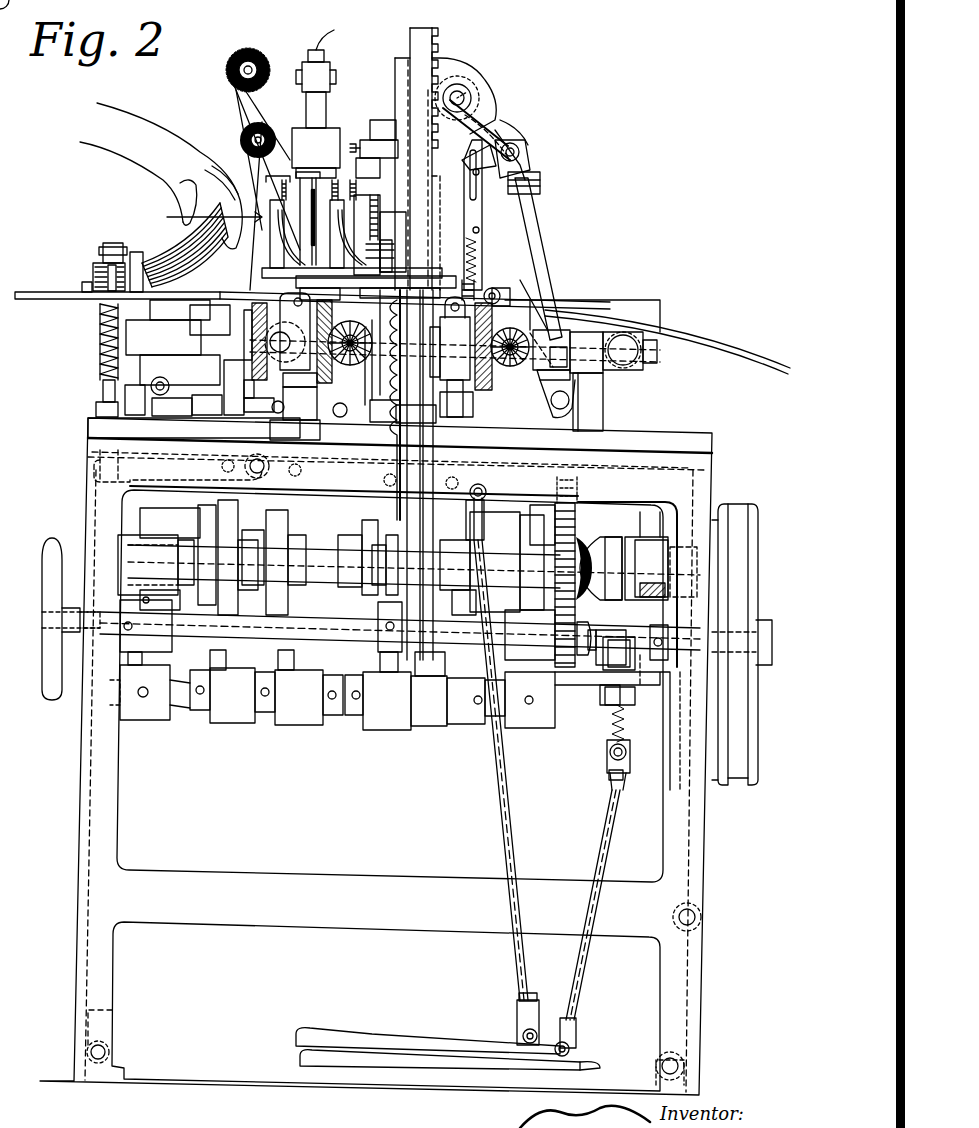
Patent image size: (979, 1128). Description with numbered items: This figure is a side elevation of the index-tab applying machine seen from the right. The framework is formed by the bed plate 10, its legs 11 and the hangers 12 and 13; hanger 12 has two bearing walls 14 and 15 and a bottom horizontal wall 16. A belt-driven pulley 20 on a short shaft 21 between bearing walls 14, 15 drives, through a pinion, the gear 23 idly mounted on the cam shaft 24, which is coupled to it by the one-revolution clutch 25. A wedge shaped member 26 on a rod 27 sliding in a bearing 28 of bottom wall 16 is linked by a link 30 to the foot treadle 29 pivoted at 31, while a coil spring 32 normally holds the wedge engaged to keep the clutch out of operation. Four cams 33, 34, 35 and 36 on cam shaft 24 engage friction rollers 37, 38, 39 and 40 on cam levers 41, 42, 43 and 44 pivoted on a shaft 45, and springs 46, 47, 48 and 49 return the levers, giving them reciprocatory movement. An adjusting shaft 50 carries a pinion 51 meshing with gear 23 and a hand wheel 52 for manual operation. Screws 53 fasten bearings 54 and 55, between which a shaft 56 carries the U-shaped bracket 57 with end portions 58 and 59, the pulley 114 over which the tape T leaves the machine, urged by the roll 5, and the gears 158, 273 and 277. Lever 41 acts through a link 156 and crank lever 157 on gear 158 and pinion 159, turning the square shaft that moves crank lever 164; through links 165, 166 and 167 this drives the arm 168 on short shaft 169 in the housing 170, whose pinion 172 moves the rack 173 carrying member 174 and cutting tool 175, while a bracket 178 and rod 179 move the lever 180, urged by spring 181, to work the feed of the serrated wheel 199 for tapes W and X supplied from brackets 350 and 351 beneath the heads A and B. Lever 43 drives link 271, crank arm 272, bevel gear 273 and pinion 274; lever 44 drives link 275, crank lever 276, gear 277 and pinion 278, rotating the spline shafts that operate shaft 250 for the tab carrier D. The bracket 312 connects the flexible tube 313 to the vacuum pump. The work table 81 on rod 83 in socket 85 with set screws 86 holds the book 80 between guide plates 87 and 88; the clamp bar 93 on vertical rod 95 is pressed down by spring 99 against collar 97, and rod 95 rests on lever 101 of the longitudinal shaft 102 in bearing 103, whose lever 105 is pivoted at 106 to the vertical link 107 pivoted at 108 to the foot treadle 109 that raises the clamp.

The roll 5 is at (406, 276).
The bed plate 10 is at (636, 432).
The legs 11 is at (108, 783).
The hanger 12 is at (590, 690).
The hanger 13 is at (150, 705).
The bearing wall 14 is at (656, 512).
The bearing wall 15 is at (545, 520).
The bottom horizontal wall 16 is at (600, 712).
The pulley 20 is at (735, 735).
The short shaft 21 is at (772, 640).
The gear 23 is at (580, 512).
The cam shaft 24 is at (330, 568).
The clutch 25 is at (622, 596).
The wedge shaped member 26 is at (630, 613).
The rod 27 is at (627, 730).
The bearing 28 is at (623, 662).
The foot treadle 29 is at (464, 1068).
The link 30 is at (606, 826).
The pivot 31 is at (688, 1063).
The coil spring 32 is at (612, 730).
The cam 33 is at (480, 518).
The cam 34 is at (370, 592).
The cam 35 is at (298, 518).
The cam 36 is at (205, 512).
The friction roller 37 is at (458, 595).
The friction roller 38 is at (352, 592).
The friction roller 39 is at (262, 585).
The friction roller 40 is at (188, 588).
The cam lever 41 is at (448, 660).
The cam lever 42 is at (384, 657).
The cam lever 43 is at (282, 654).
The cam lever 44 is at (218, 650).
The shaft 45 is at (344, 718).
The spring 46 is at (462, 483).
The spring 47 is at (398, 482).
The spring 48 is at (310, 480).
The spring 49 is at (225, 470).
The shaft 50 is at (372, 630).
The pinion 51 is at (556, 636).
The hand wheel 52 is at (52, 560).
The screws 53 is at (88, 440).
The bearing 54 is at (610, 345).
The bearing 55 is at (102, 384).
The shaft 56 is at (540, 300).
The U-shaped bracket 57 is at (552, 320).
The end portion 58 is at (560, 328).
The end portion 59 is at (180, 320).
The book 80 is at (180, 242).
The work table 81 is at (48, 292).
The rod 83 is at (178, 362).
The socket 85 is at (176, 400).
The set screws 86 is at (160, 398).
The guide plates 87 is at (138, 254).
The guide plates 88 is at (92, 278).
The clamp bar 93 is at (108, 248).
The vertical rod 95 is at (94, 264).
The collar 97 is at (96, 362).
The spring 99 is at (96, 320).
The lever 101 is at (108, 462).
The longitudinal shaft 102 is at (240, 525).
The bearing 103 is at (281, 430).
The lever 105 is at (352, 505).
The pivot 106 is at (482, 492).
The vertical link 107 is at (505, 795).
The pivot 108 is at (522, 1036).
The foot treadle 109 is at (372, 1042).
The pulley 114 is at (402, 290).
The link 156 is at (424, 422).
The crank lever 157 is at (476, 422).
The gear 158 is at (520, 380).
The pinion 159 is at (496, 305).
The crank lever 164 is at (540, 403).
The link 165 is at (603, 392).
The link 166 is at (541, 248).
The link 167 is at (528, 170).
The arm 168 is at (500, 117).
The short shaft 169 is at (472, 95).
The housing 170 is at (470, 66).
The pinion 172 is at (470, 92).
The rack 173 is at (438, 40).
The laterally extending member 174 is at (388, 206).
The cutting tool 175 is at (386, 236).
The bracket 178 is at (524, 132).
The rod 179 is at (524, 150).
The lever 180 is at (486, 222).
The spring 181 is at (478, 260).
The serrated wheel 199 is at (476, 286).
The shaft 250 is at (318, 106).
The link 271 is at (320, 402).
The crank arm 272 is at (290, 392).
The bevel gear 273 is at (320, 388).
The pinion 274 is at (340, 328).
The link 275 is at (226, 402).
The crank lever 276 is at (234, 388).
The gear 277 is at (250, 300).
The pinion 278 is at (280, 340).
The bracket 312 is at (322, 62).
The flexible tube 313 is at (324, 50).
The bracket 350 is at (270, 82).
The bracket 351 is at (282, 140).
The printing head A is at (402, 46).
The cutting head B is at (370, 114).
The tab carrier D is at (154, 217).
The gummed tape T is at (380, 413).
The tape W is at (240, 150).
The tape X is at (232, 104).